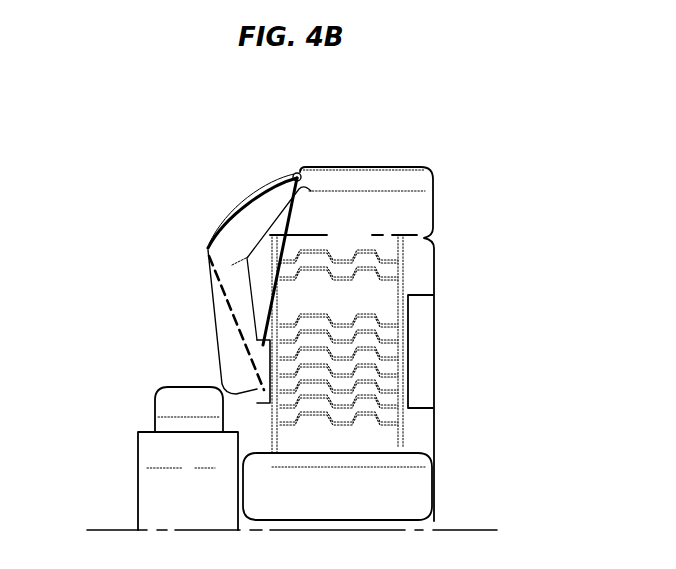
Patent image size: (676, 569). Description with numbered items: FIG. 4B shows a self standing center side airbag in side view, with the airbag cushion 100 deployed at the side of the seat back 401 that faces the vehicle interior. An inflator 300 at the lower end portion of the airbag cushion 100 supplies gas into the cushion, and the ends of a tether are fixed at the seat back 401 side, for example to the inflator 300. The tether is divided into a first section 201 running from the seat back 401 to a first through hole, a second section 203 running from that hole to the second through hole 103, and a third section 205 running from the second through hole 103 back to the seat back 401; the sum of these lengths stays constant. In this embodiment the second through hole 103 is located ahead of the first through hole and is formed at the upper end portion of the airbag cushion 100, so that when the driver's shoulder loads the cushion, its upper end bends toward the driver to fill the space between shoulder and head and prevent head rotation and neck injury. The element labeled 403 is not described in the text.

The airbag cushion 100 is at (280, 170).
The second through hole 103 is at (300, 172).
The first section 201 is at (227, 323).
The second section 203 is at (263, 192).
The third section 205 is at (288, 222).
The inflator 300 is at (270, 366).
The seat back 401 is at (415, 210).
The console 403 is at (162, 487).